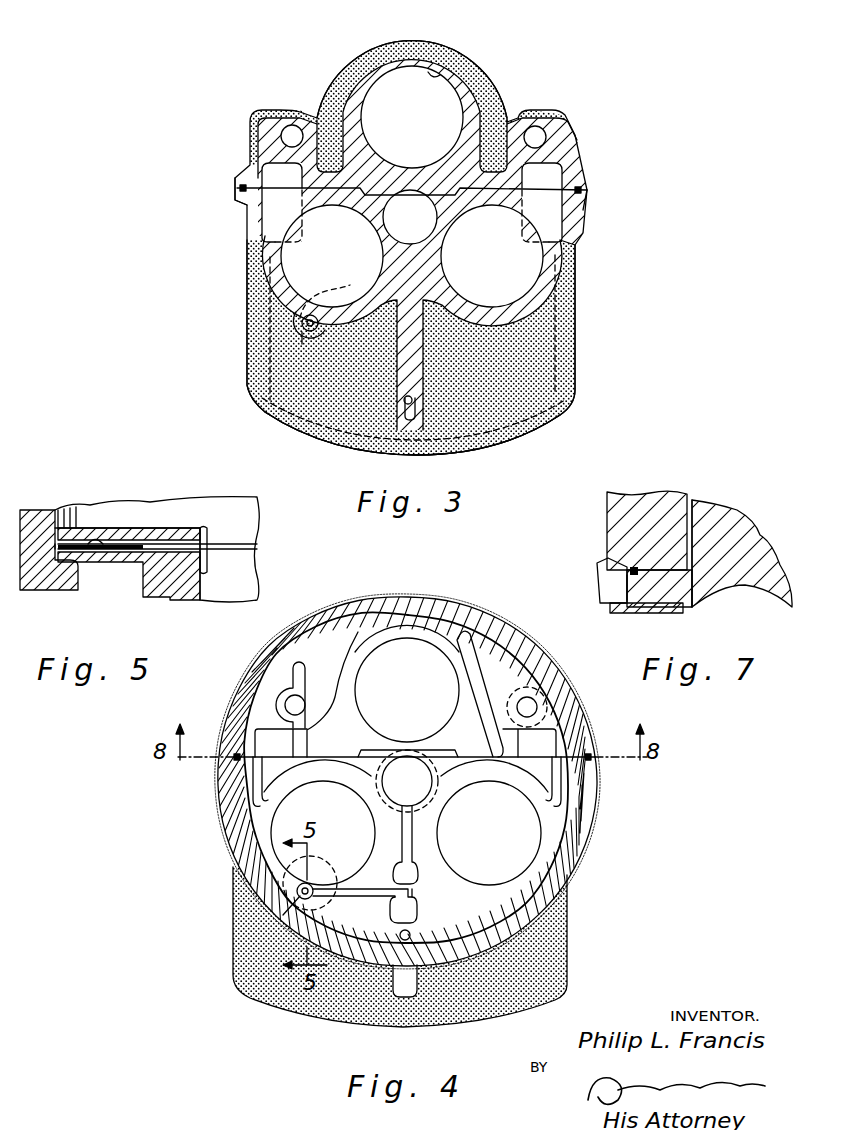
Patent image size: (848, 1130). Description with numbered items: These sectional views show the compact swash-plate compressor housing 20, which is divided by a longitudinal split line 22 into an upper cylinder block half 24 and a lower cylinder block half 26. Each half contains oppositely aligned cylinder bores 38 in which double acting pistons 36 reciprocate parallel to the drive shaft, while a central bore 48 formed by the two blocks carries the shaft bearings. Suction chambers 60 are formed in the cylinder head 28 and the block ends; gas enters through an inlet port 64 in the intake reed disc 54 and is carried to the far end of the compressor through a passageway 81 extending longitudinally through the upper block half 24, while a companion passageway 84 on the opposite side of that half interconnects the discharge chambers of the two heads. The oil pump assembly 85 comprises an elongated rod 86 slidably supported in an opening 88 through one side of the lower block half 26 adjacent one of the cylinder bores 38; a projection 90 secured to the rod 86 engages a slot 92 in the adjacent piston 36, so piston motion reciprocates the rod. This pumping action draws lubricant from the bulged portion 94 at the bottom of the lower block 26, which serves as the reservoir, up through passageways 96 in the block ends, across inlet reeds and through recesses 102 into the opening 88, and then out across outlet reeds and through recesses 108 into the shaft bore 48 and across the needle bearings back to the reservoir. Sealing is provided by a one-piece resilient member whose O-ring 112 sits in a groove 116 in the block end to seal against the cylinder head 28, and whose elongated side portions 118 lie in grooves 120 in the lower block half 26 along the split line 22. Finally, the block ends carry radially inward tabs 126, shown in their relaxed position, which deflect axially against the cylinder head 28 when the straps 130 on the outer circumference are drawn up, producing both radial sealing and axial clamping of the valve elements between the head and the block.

In FIG. 3, the housing 20 is at (393, 40).
In FIG. 3, the split line 22 is at (352, 187).
In FIG. 4, the split line 22 is at (237, 755).
In FIG. 3, the upper cylinder block half 24 is at (507, 100).
In FIG. 4, the upper cylinder block half 24 is at (437, 606).
In FIG. 3, the lower cylinder block half 26 is at (575, 276).
In FIG. 5, the lower cylinder block half 26 is at (68, 576).
In FIG. 4, the lower cylinder block half 26 is at (485, 942).
In FIG. 7, the cylinder head 28 is at (618, 510).
In FIG. 5, the piston 36 is at (176, 507).
In FIG. 3, the cylinder bores 38 is at (432, 74).
In FIG. 4, the cylinder bores 38 is at (380, 643).
In FIG. 3, the bore 48 is at (399, 230).
In FIG. 4, the bore 48 is at (396, 776).
In FIG. 7, the intake reed disc 54 is at (694, 520).
In FIG. 3, the suction chambers 60 is at (552, 178).
In FIG. 4, the suction chambers 60 is at (334, 679).
In FIG. 4, the inlet port 64 is at (549, 712).
In FIG. 3, the passageway 81 is at (540, 128).
In FIG. 4, the passageway 81 is at (533, 704).
In FIG. 3, the passageway 84 is at (293, 125).
In FIG. 4, the passageway 84 is at (288, 704).
In FIG. 3, the oil pump assembly 85 is at (262, 318).
In FIG. 5, the oil pump assembly 85 is at (57, 545).
In FIG. 4, the oil pump assembly 85 is at (297, 891).
In FIG. 3, the rod 86 is at (303, 345).
In FIG. 5, the rod 86 is at (232, 548).
In FIG. 4, the rod 86 is at (275, 916).
In FIG. 3, the opening 88 is at (320, 329).
In FIG. 5, the opening 88 is at (100, 540).
In FIG. 4, the opening 88 is at (315, 895).
In FIG. 3, the projection 90 is at (318, 298).
In FIG. 5, the projection 90 is at (203, 573).
In FIG. 4, the projection 90 is at (336, 860).
In FIG. 5, the slot 92 is at (205, 527).
In FIG. 3, the bulged portion 94 is at (446, 455).
In FIG. 4, the bulged portion 94 is at (433, 1026).
In FIG. 3, the passageways 96 is at (418, 403).
In FIG. 4, the passageways 96 is at (411, 934).
In FIG. 4, the recesses 102 is at (412, 913).
In FIG. 4, the recesses 108 is at (415, 863).
In FIG. 7, the O-ring 112 is at (631, 567).
In FIG. 7, the grooves 116 is at (627, 585).
In FIG. 3, the side portions 118 is at (244, 186).
In FIG. 4, the side portions 118 is at (235, 760).
In FIG. 3, the grooves 120 is at (240, 200).
In FIG. 7, the tabs 126 is at (606, 574).
In FIG. 7, the straps 130 is at (641, 613).